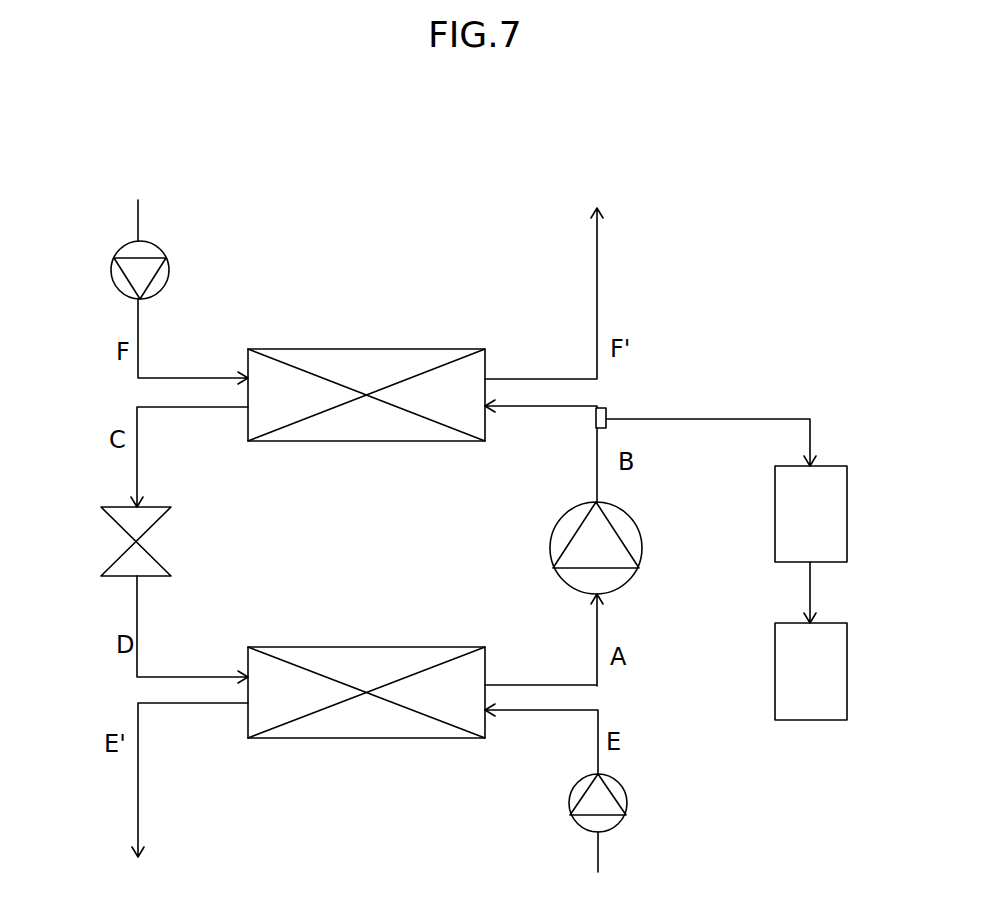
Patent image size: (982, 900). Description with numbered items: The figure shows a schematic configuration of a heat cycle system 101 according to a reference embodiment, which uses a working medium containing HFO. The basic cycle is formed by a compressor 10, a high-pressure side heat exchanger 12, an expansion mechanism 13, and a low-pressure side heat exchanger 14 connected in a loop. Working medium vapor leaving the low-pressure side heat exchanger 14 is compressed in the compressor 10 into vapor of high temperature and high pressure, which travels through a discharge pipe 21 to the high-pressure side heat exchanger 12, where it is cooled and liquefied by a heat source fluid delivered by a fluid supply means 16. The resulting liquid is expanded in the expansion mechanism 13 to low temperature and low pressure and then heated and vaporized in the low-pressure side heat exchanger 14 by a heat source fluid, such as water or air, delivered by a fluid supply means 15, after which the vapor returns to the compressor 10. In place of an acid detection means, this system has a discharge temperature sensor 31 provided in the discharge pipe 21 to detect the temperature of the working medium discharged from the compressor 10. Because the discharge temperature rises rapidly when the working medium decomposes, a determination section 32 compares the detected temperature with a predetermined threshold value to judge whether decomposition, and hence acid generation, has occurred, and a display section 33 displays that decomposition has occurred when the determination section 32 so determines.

The heat cycle system 101 is at (396, 157).
The compressor 10 is at (640, 527).
The high-pressure side heat exchanger 12 is at (432, 349).
The expansion mechanism 13 is at (102, 500).
The low-pressure side heat exchanger 14 is at (437, 647).
The fluid supply means 15 is at (622, 788).
The fluid supply means 16 is at (118, 248).
The discharge pipe 21 is at (593, 465).
The discharge temperature sensor 31 is at (607, 412).
The determination section 32 is at (830, 460).
The display section 33 is at (830, 618).